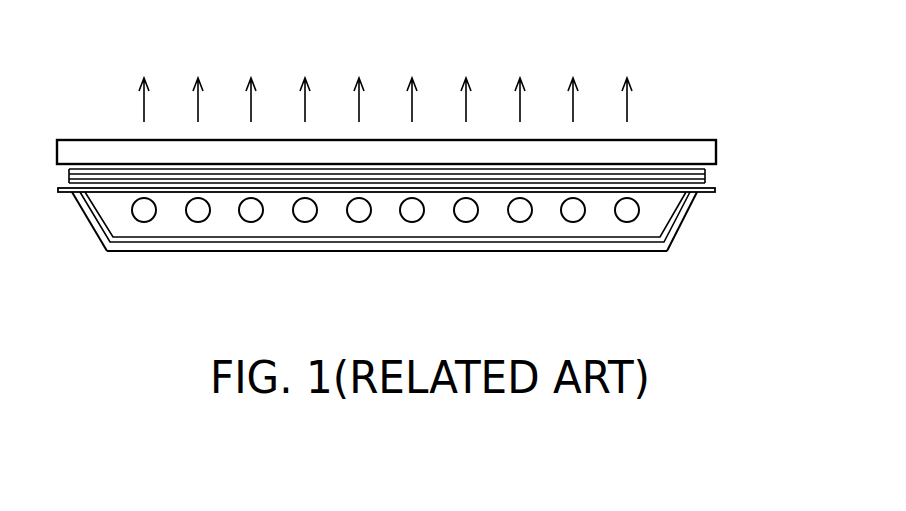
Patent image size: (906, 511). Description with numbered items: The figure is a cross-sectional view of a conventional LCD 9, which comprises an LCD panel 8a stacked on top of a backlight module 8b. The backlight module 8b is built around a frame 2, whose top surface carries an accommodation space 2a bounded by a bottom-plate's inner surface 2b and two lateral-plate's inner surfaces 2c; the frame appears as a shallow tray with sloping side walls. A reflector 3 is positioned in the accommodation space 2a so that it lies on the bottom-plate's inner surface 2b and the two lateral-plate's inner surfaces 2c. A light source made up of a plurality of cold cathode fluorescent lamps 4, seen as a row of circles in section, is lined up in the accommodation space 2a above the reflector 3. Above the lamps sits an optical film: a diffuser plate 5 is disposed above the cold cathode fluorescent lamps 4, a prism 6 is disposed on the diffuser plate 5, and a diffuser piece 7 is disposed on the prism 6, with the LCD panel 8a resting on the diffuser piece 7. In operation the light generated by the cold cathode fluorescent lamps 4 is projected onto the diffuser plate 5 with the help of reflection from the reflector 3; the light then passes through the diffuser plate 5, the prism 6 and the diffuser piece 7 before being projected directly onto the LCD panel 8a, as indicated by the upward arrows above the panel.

The LCD 9 is at (762, 50).
The LCD panel 8a is at (718, 150).
The backlight module 8b is at (824, 123).
The diffuser piece 7 is at (703, 175).
The prism 6 is at (703, 178).
The diffuser plate 5 is at (703, 181).
The cold cathode fluorescent lamps 4 is at (630, 208).
The reflector 3 is at (678, 222).
The frame 2 is at (424, 253).
The accommodation space 2a is at (642, 221).
The bottom-plate's inner surface 2b is at (249, 243).
The lateral-plate's inner surfaces 2c is at (91, 212).